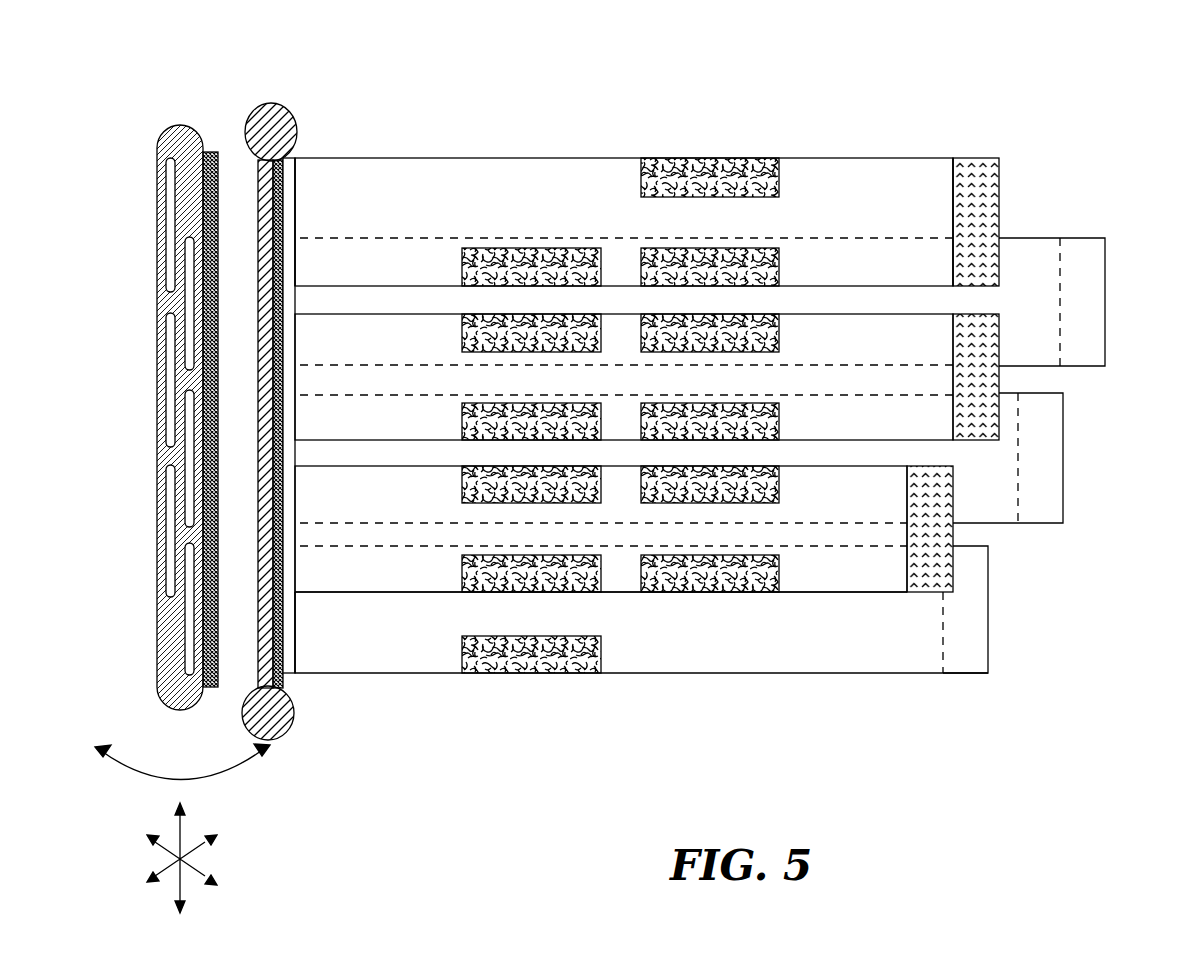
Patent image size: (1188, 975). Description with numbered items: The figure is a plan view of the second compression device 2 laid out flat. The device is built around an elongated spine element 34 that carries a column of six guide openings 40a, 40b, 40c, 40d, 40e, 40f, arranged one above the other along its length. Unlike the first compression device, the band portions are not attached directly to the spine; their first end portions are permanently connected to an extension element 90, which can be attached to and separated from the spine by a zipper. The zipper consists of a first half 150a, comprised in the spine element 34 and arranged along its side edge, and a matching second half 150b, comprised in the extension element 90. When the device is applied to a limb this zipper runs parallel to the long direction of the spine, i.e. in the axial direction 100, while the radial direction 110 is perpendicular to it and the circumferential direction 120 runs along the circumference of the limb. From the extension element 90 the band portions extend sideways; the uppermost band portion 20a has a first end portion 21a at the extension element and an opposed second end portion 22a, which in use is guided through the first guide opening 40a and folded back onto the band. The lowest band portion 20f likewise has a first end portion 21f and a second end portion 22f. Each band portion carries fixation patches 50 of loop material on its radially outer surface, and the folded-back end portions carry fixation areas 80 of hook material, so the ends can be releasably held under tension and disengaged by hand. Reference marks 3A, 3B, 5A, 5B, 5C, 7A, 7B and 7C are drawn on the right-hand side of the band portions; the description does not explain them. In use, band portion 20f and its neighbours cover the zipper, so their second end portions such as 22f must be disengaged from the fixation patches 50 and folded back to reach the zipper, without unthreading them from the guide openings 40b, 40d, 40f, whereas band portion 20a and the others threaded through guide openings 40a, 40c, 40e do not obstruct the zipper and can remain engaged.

The second compression device 2 is at (748, 38).
The holder body 34 is at (135, 400).
The first guide opening 40a is at (170, 207).
The guide opening 40b is at (188, 303).
The guide opening 40c is at (170, 362).
The guide opening 40d is at (188, 458).
The guide opening 40e is at (170, 528).
The guide opening 40f is at (188, 623).
The first half of the zipper 150a is at (207, 233).
The second half of the zipper 150b is at (257, 165).
The extension element 90 is at (273, 102).
The circumferential direction 120 is at (225, 775).
The axial direction 100 is at (178, 835).
The radial direction 110 is at (197, 858).
The band portion 20a is at (515, 185).
The first end portion 21a is at (315, 185).
The second end portion 22a is at (935, 185).
The band portion 20f is at (630, 655).
The first end portion 21f is at (315, 655).
The second end portion 22f is at (920, 655).
The fixation patch 50 is at (685, 160).
The fixation area 80 is at (978, 202).
The interconnect 3A is at (935, 535).
The interconnect 3B is at (980, 375).
The cell section 5A is at (822, 645).
The cell section 5B is at (992, 495).
The cell section 5C is at (1030, 320).
The frame 7A is at (972, 637).
The frame 7B is at (1045, 450).
The frame 7C is at (1085, 268).